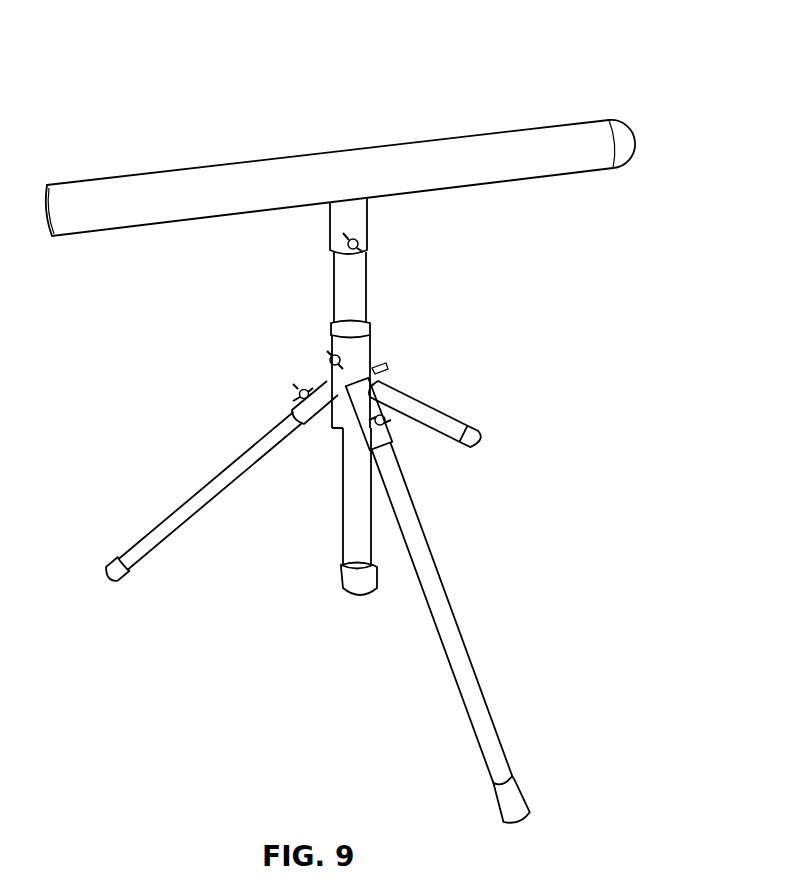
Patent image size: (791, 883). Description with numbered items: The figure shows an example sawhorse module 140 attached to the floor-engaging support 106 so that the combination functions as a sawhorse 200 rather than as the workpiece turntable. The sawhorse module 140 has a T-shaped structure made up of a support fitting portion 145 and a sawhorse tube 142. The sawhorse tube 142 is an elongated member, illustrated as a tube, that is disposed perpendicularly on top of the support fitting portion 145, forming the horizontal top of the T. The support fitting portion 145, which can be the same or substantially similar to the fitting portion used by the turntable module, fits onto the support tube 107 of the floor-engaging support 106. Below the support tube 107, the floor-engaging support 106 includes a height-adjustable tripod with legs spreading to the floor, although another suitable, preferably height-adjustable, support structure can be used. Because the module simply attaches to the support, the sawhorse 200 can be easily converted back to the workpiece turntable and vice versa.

The sawhorse 200 is at (399, 424).
The sawhorse tube 142 is at (165, 172).
The support fitting portion 145 is at (367, 232).
The support tube 107 is at (367, 288).
The sawhorse module 140 is at (276, 228).
The floor-engaging support 106 is at (243, 424).